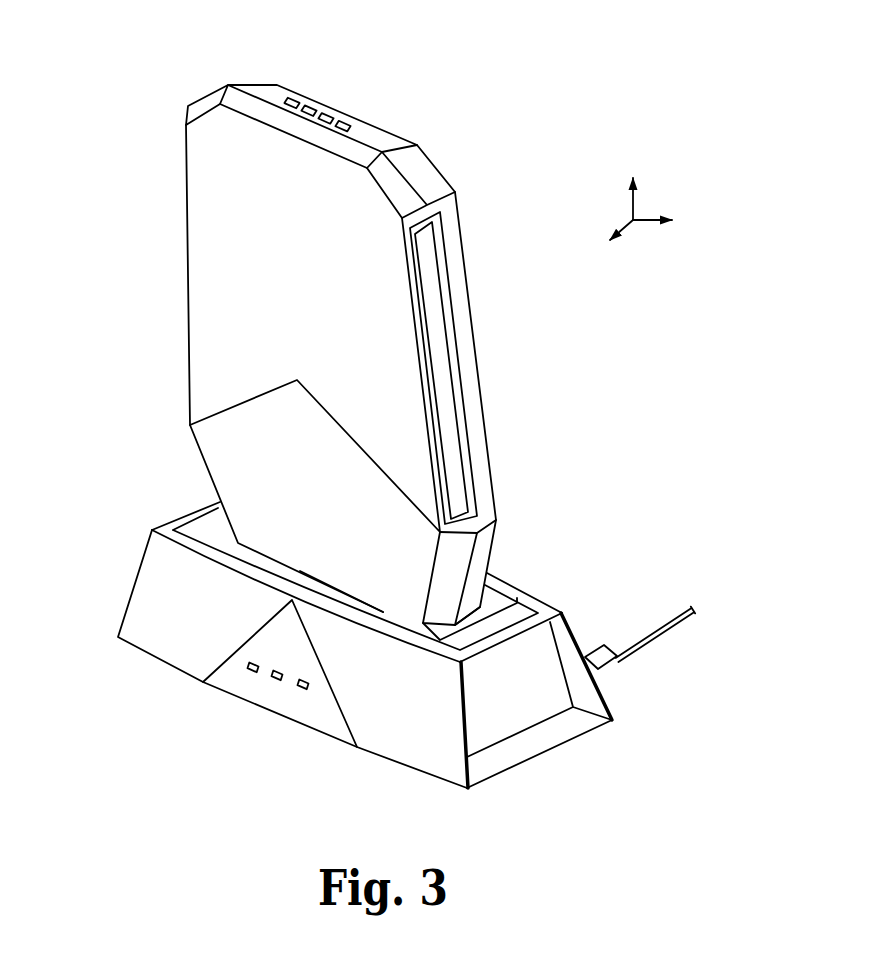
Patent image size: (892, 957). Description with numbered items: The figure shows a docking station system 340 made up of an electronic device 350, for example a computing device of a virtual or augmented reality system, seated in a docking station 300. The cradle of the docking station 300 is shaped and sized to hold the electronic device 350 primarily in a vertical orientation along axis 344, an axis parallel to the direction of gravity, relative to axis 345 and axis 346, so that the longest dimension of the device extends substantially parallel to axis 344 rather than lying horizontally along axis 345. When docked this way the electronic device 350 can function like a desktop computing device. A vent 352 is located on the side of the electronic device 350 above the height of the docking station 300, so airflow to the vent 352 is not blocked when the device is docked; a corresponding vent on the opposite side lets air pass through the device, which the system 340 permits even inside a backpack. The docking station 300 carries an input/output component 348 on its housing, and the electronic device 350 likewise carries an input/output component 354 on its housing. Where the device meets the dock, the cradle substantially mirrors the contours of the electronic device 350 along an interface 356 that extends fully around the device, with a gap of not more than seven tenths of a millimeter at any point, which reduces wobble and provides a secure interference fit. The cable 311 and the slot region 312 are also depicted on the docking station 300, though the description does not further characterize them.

The docking station 300 is at (177, 510).
The power cable 311 is at (607, 665).
The docking slot 312 is at (488, 638).
The docking station system 340 is at (105, 65).
The axis 344 is at (633, 184).
The axis 345 is at (672, 220).
The axis 346 is at (603, 240).
The input/output component 348 is at (250, 665).
The electronic device 350 is at (213, 95).
The vent 352 is at (467, 357).
The input/output component 354 is at (342, 117).
The interface 356 is at (380, 613).